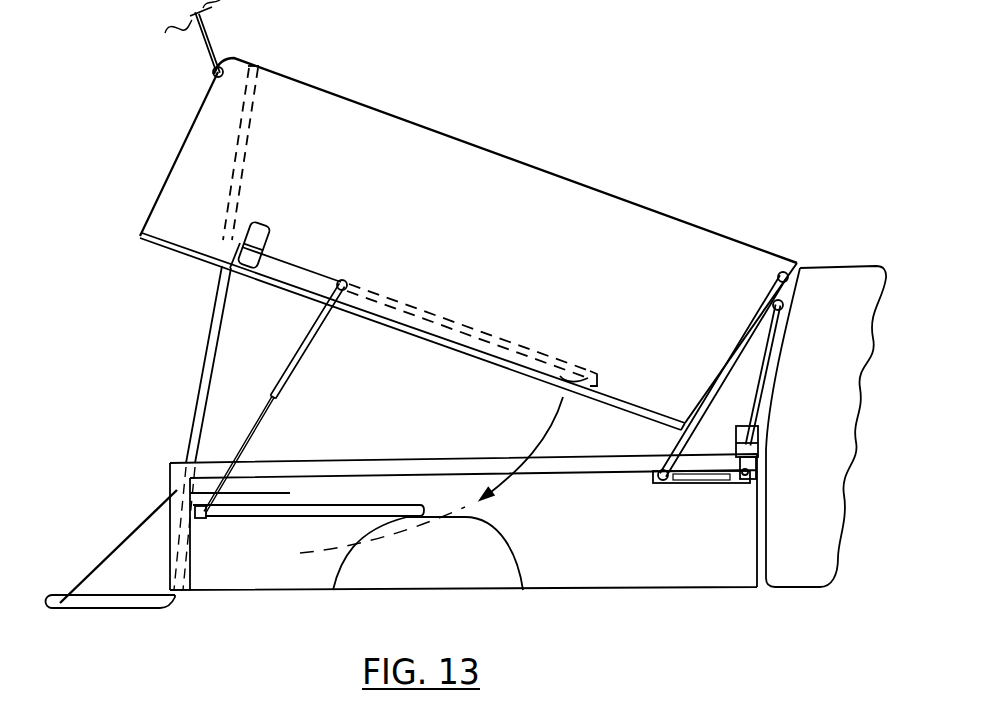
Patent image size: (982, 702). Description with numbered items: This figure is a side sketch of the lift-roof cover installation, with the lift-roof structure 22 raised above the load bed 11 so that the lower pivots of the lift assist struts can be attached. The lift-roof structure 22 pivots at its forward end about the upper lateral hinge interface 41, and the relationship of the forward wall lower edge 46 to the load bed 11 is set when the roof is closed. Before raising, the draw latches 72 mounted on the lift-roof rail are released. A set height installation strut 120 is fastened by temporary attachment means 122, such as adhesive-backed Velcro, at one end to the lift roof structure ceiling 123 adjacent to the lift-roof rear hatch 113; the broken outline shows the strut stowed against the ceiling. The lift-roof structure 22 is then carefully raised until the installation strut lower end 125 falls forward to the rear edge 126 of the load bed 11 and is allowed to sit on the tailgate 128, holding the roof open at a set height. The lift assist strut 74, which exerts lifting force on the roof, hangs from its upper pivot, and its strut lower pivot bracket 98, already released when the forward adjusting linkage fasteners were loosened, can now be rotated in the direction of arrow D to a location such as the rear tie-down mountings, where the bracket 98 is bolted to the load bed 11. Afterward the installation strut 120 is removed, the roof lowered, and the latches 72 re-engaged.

The load bed 11 is at (644, 554).
The lift-roof structure 22 is at (522, 258).
The upper lateral hinge interface 41 is at (778, 275).
The forward wall lower edge 46 is at (752, 443).
The draw latch 72 is at (272, 240).
The lift assist strut 74 is at (293, 363).
The strut lower pivot bracket 98 is at (210, 523).
The lift-roof rear hatch 113 is at (214, 72).
The set height installation strut 120 is at (208, 370).
The temporary attachment means 122 is at (255, 62).
The lift roof structure ceiling 123 is at (355, 99).
The installation strut lower end 125 is at (163, 583).
The rear edge of the load bed 126 is at (175, 598).
The tailgate 128 is at (143, 603).
The direction of rotation arrow D is at (521, 457).